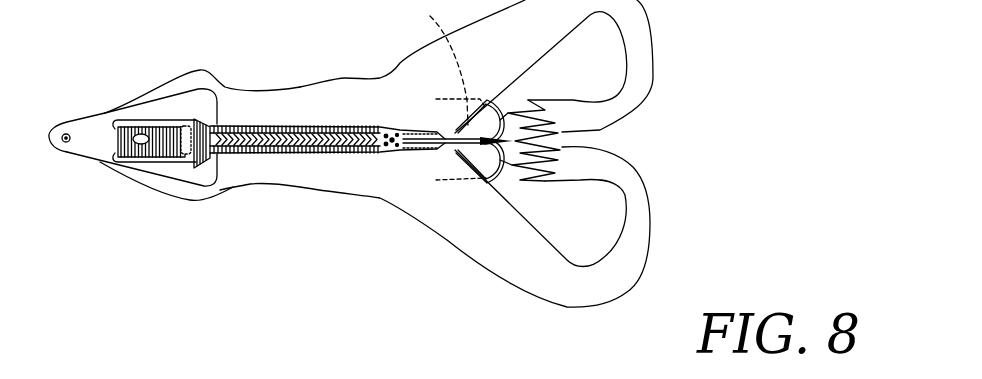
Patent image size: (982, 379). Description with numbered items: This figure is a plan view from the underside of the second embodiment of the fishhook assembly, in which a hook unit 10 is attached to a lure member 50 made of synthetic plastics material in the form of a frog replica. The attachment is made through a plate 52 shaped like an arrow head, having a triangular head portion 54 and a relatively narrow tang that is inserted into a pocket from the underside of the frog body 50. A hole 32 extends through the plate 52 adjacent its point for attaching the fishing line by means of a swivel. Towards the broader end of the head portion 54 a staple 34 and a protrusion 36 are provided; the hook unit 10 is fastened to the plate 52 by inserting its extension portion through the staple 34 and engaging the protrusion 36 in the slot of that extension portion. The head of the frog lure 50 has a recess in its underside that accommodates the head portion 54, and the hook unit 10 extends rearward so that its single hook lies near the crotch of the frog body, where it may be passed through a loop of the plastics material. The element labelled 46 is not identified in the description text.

The hook unit 10 is at (358, 170).
The hole 32 is at (80, 117).
The staple 34 is at (186, 141).
The protrusion 36 is at (116, 161).
The hook / hidden cavity outline 46 is at (449, 91).
The lure member 50 is at (300, 214).
The plate 52 is at (176, 70).
The head portion 54 is at (105, 113).